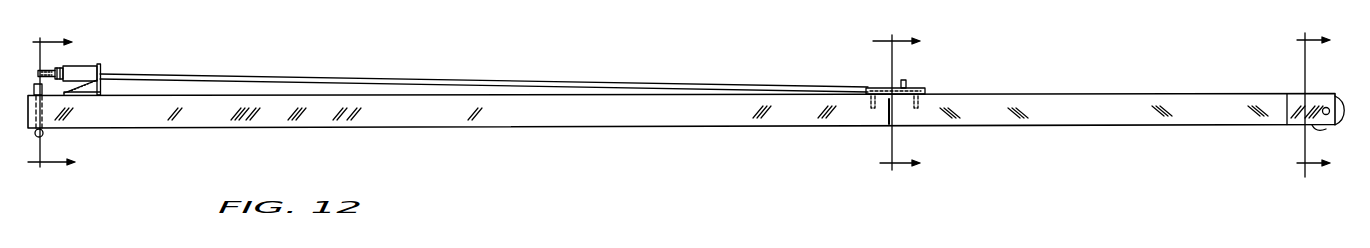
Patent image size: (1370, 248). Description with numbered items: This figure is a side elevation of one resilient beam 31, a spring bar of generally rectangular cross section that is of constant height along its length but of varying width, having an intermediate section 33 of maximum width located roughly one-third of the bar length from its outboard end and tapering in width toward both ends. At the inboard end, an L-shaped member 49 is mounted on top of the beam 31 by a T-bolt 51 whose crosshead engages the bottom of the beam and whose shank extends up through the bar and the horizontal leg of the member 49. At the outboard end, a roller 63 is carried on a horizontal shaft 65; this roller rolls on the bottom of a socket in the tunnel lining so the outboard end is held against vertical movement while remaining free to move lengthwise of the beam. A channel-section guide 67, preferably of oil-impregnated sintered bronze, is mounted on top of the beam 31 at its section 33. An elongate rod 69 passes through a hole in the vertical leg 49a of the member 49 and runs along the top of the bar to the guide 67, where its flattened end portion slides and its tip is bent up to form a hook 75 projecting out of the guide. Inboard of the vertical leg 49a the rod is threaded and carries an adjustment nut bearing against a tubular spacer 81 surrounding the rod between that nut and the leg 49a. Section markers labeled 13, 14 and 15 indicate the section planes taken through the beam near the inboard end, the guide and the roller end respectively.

The section line 13- 13 is at (64, 102).
The section line 14- 14 is at (910, 103).
The section line 15- 15 is at (1325, 104).
The resilient crossbeam 31 is at (583, 128).
The intermediate section 33 is at (888, 105).
The L-shaped member 49 is at (101, 90).
The vertical leg 49a is at (100, 64).
The T-bolt 51 is at (54, 132).
The roller 63 is at (1316, 126).
The horizontal shaft 65 is at (1325, 106).
The channel-section guide 67 is at (925, 90).
The elongate rod 69 is at (500, 62).
The hook 75 is at (904, 81).
The tubular spacer 81 is at (85, 66).